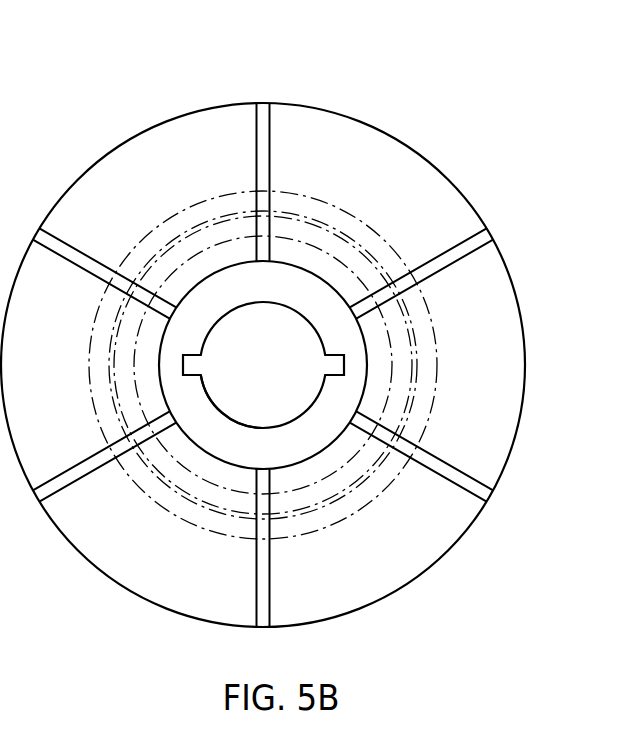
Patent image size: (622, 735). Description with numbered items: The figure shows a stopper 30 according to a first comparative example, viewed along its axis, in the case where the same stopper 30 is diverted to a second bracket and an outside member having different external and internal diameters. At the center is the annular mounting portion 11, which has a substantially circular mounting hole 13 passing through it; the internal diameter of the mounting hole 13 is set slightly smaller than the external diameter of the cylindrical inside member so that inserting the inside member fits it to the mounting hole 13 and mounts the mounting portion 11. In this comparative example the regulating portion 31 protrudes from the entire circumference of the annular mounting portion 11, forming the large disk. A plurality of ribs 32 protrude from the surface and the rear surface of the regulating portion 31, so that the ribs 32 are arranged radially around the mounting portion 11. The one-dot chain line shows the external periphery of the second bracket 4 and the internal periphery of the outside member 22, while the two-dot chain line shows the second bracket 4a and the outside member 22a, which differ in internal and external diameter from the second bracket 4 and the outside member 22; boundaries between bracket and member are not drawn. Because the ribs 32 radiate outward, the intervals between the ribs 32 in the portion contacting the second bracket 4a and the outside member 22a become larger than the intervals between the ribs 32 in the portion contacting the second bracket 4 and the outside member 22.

The stopper 30 is at (447, 103).
The regulating portion 31 is at (500, 407).
The ribs 32 is at (457, 255).
The outside member 22a is at (322, 188).
The second bracket 4a is at (358, 223).
The second bracket 4 is at (332, 235).
The outside member 22 is at (306, 238).
The mounting portion 11 is at (210, 318).
The mounting hole 13 is at (212, 399).